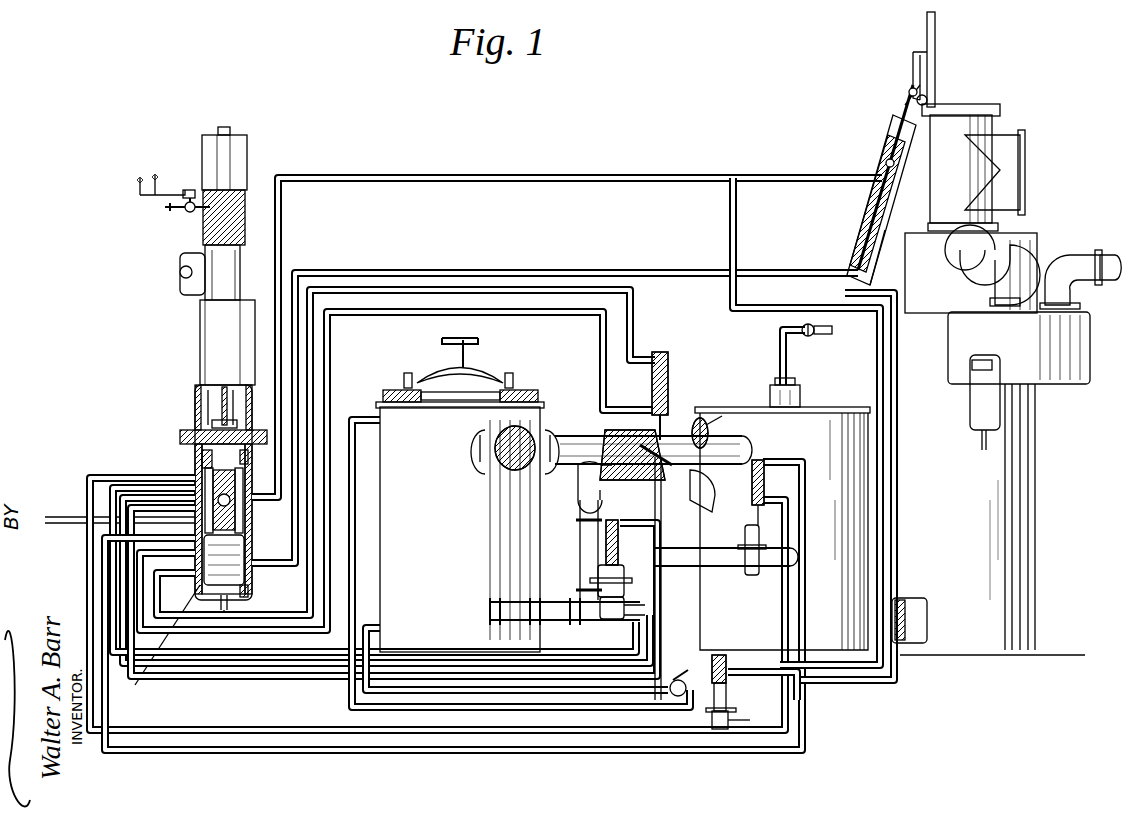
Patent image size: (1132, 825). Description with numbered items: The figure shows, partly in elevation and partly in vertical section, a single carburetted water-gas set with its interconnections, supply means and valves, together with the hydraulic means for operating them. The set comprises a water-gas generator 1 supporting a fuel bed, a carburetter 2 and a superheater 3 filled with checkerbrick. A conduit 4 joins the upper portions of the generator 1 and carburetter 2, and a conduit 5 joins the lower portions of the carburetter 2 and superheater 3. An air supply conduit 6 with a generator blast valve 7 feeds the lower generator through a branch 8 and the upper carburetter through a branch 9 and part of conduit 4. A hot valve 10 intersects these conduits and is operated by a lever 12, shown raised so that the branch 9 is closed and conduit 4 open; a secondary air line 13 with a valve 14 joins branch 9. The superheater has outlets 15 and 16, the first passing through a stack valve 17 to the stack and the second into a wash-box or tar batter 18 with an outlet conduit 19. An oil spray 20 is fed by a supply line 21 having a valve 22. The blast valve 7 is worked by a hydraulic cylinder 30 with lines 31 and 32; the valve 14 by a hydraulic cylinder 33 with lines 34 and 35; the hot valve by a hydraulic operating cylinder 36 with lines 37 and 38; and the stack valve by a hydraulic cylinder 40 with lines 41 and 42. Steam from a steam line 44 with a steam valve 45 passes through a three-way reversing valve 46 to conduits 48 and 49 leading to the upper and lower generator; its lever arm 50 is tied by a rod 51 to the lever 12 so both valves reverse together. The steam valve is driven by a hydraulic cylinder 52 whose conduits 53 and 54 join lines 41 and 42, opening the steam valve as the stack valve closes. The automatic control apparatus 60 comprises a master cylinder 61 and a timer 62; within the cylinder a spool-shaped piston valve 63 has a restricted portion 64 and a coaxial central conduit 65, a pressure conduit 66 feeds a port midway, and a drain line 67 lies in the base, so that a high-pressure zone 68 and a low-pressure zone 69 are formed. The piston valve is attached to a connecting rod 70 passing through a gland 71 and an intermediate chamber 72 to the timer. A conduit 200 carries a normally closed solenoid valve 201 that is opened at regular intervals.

The water-gas generator 1 is at (460, 495).
The carburetter 2 is at (782, 528).
The superheater 3 is at (992, 519).
The conduit 4 is at (600, 435).
The conduit 5 is at (920, 600).
The air supply conduit 6 is at (612, 620).
The generator blast valve 7 is at (598, 575).
The branch 8 is at (540, 625).
The branch 9 is at (590, 520).
The hot valve 10 is at (640, 440).
The lever 12 is at (715, 415).
The carburetter blast or secondary air line 13 is at (740, 568).
The valve 14 is at (752, 575).
The outlet 15 is at (1005, 128).
The outlet 16 is at (1030, 245).
The stack valve 17 is at (935, 50).
The wash-box or tar batter 18 is at (1065, 385).
The outlet conduit 19 is at (1090, 260).
The oil spray 20 is at (800, 395).
The supply line 21 is at (790, 360).
The valve 22 is at (832, 330).
The hydraulic cylinder 30 is at (606, 545).
The hydraulic pressure and relief line 31 is at (650, 535).
The hydraulic pressure and relief line 32 is at (125, 487).
The hydraulic cylinder 33 is at (778, 472).
The hydraulic pressure and relief line 34 is at (105, 565).
The hydraulic pressure and relief line 35 is at (155, 477).
The hydraulic operating cylinder 36 is at (668, 380).
The hydraulic pressure and relief line 37 is at (430, 275).
The hydraulic pressure and relief line 38 is at (123, 503).
The hydraulic cylinder 40 is at (865, 215).
The hydraulic pressure and relief line 41 is at (335, 180).
The hydraulic pressure and relief line 42 is at (350, 262).
The steam line 44 is at (758, 715).
The steam valve 45 is at (726, 695).
The 3-way reversing valve 46 is at (675, 678).
The conduit 48 is at (372, 430).
The conduit 49 is at (375, 630).
The lever arm 50 is at (712, 670).
The rod 51 is at (668, 625).
The hydraulic cylinder 52 is at (760, 672).
The hydraulic pressure and relief conduit 53 is at (752, 308).
The hydraulic pressure and relief conduit 54 is at (835, 293).
The automatic control apparatus 60 is at (206, 395).
The master cylinder 61 is at (135, 685).
The timer 62 is at (238, 158).
The piston valve 63 is at (244, 545).
The central portion of restricted diameter 64 is at (240, 525).
The coaxial central conduit 65 is at (202, 460).
The hydraulic pressure conduit 66 is at (75, 520).
The hydraulic relief conduit or drain line 67 is at (228, 605).
The high-pressure zone 68 is at (236, 505).
The low-pressure zone 69 is at (246, 458).
The connecting rod 70 is at (222, 395).
The gland 71 is at (215, 424).
The intermediate chamber 72 is at (210, 405).
The conduit 200 is at (192, 214).
The solenoid valve 201 is at (165, 212).